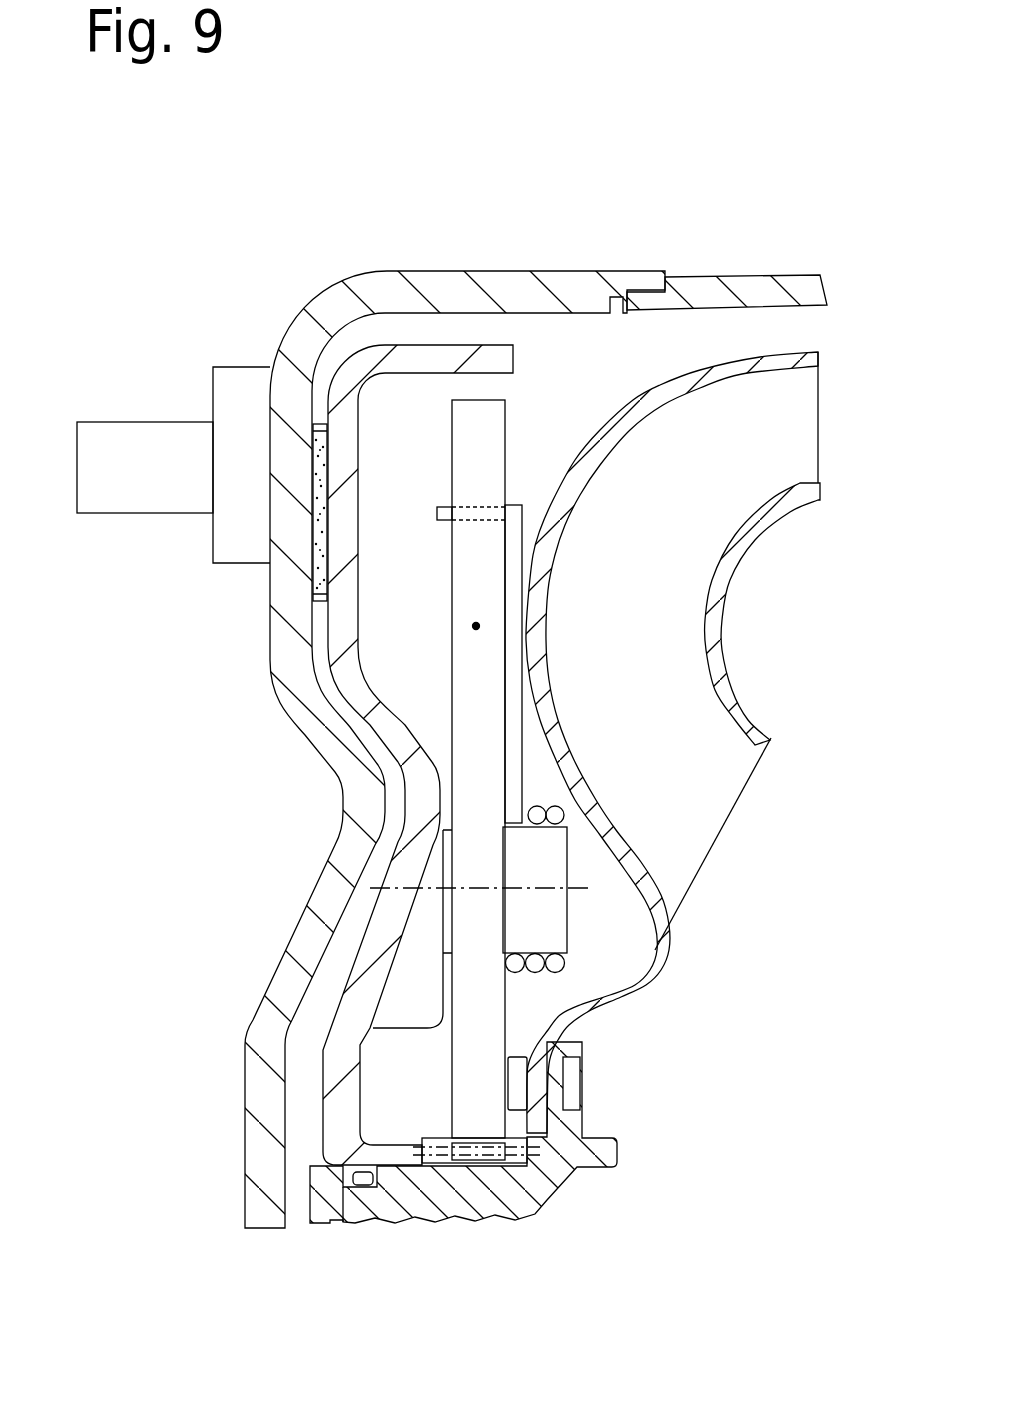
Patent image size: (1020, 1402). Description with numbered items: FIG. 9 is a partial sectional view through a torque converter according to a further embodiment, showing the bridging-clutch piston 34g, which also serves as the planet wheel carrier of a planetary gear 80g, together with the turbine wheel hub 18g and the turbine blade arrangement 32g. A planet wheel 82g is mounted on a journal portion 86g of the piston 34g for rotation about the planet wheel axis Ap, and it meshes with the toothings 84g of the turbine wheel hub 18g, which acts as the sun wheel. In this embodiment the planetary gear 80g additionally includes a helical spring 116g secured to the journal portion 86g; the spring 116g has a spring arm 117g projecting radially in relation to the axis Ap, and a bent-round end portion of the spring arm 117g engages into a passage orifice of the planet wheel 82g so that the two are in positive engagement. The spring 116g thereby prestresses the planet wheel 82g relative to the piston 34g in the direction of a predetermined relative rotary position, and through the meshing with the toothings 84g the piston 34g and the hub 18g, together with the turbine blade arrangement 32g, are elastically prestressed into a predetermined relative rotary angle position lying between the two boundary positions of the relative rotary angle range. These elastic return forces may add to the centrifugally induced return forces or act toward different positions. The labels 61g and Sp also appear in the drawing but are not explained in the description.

The turbine wheel hub 18g is at (488, 1195).
The turbine blade arrangement 32g is at (541, 688).
The piston 34g is at (363, 678).
The seal 61g is at (318, 568).
The planetary gear 80g is at (427, 953).
The planet wheel 82g is at (483, 662).
The toothings 84g is at (437, 1165).
The journal portions 86g is at (520, 858).
The helical spring 116g is at (556, 963).
The spring arm 117g is at (505, 750).
The piston surface Sp is at (480, 622).
The planet wheel axis Ap is at (580, 892).